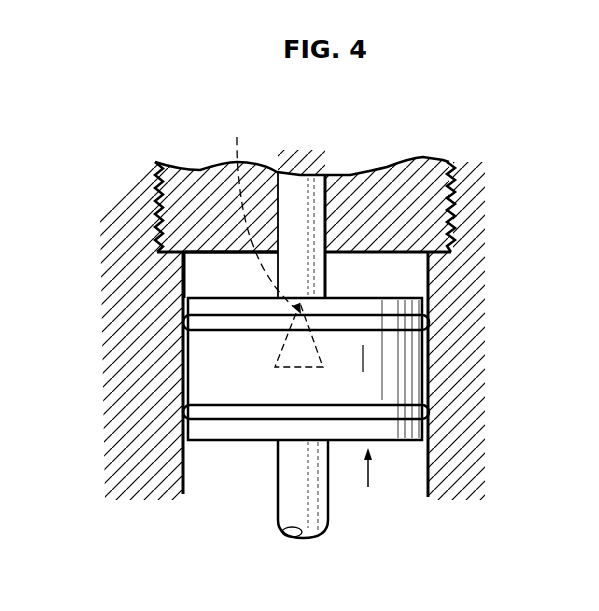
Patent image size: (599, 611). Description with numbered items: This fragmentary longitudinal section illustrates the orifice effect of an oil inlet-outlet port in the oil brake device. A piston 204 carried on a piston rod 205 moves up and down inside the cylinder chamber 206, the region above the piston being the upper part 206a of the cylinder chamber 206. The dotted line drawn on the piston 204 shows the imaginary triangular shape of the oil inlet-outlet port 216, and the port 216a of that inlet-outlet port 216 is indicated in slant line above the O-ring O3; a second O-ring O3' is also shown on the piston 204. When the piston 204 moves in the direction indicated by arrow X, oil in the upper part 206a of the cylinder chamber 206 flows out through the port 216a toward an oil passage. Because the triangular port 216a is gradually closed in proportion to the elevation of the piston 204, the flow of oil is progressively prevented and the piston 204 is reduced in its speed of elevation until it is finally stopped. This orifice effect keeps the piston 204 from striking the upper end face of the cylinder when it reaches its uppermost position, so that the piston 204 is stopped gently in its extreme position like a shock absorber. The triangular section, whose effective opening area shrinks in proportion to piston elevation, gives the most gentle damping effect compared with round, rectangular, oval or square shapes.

The piston 204 is at (407, 365).
The piston rod 205 is at (317, 508).
The cylinder chamber 206 is at (195, 478).
The upper part of the cylinder chamber 206a is at (200, 271).
The oil inlet-outlet port 216 is at (298, 350).
The port 216a is at (265, 211).
The O-ring O3 is at (355, 283).
The lower O-ring seal O3' is at (354, 452).
The arrow X is at (367, 481).